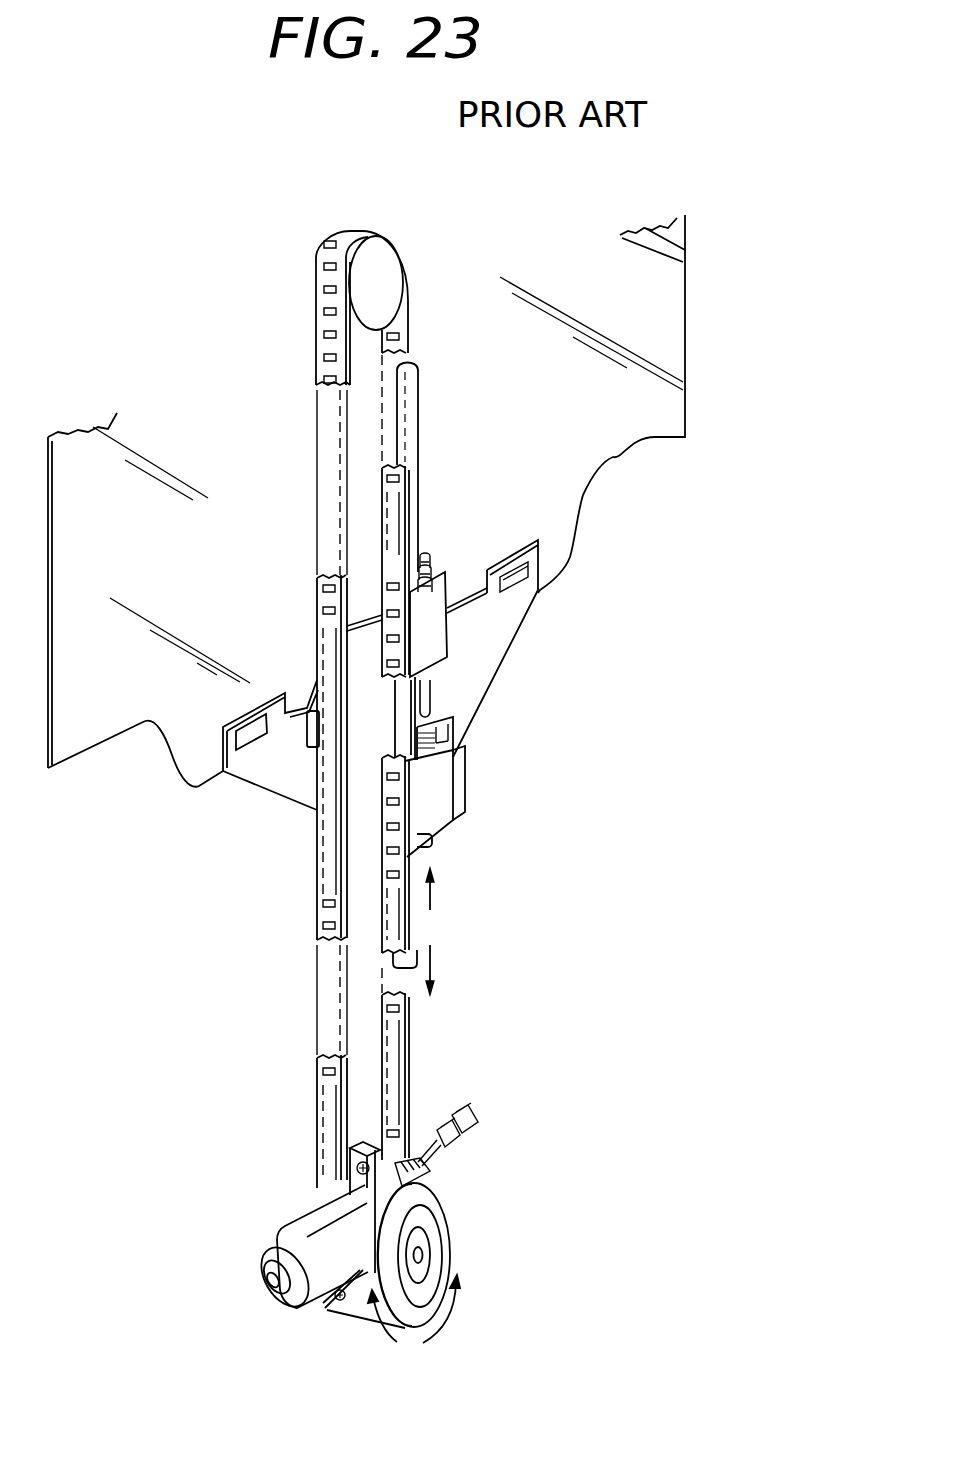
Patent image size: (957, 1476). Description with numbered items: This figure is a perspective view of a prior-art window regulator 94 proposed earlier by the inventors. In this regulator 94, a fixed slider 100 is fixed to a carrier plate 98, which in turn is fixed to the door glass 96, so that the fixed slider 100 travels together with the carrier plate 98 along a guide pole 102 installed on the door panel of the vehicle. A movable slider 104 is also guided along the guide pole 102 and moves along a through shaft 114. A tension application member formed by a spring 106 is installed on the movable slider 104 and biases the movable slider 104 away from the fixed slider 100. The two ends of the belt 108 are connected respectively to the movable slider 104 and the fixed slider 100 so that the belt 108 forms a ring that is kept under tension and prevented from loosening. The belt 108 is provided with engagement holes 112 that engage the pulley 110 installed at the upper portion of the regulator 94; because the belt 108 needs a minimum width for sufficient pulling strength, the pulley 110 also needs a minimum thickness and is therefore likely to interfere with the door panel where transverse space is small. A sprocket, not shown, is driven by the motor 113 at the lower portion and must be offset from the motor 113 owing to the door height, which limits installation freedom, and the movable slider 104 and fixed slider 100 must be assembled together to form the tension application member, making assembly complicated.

The regulator 94 is at (482, 730).
The door glass 96 is at (613, 457).
The carrier plate 98 is at (490, 644).
The fixed slider 100 is at (450, 590).
The guide pole 102 is at (415, 395).
The movable slider 104 is at (455, 800).
The spring 106 is at (455, 760).
The belt 108 is at (400, 858).
The pulley 110 is at (392, 283).
The engagement holes 112 is at (325, 903).
The motor 113 is at (315, 1223).
The through shaft 114 is at (430, 690).